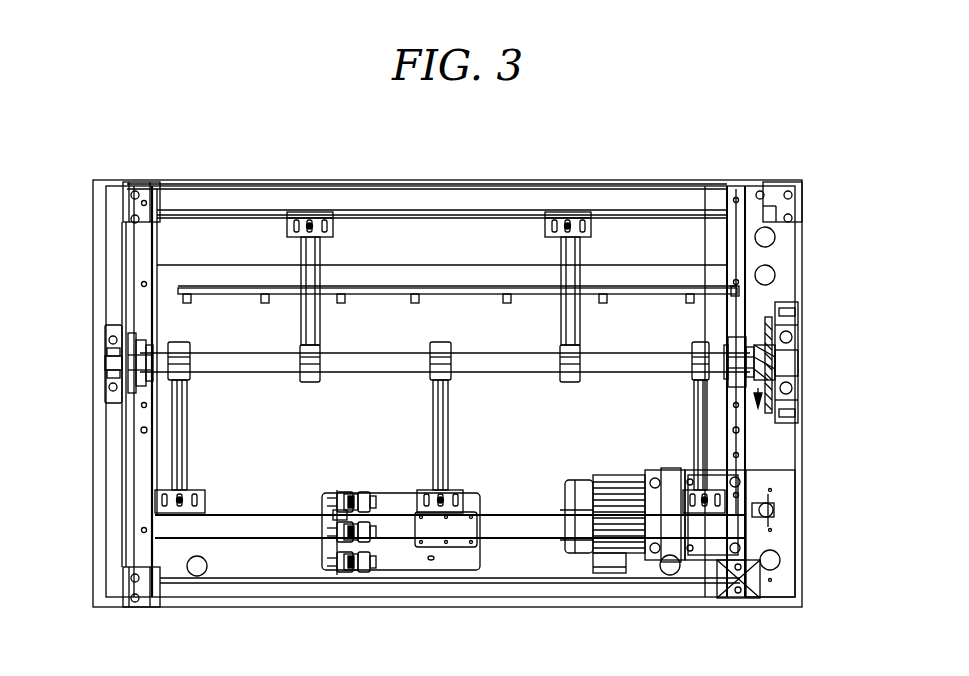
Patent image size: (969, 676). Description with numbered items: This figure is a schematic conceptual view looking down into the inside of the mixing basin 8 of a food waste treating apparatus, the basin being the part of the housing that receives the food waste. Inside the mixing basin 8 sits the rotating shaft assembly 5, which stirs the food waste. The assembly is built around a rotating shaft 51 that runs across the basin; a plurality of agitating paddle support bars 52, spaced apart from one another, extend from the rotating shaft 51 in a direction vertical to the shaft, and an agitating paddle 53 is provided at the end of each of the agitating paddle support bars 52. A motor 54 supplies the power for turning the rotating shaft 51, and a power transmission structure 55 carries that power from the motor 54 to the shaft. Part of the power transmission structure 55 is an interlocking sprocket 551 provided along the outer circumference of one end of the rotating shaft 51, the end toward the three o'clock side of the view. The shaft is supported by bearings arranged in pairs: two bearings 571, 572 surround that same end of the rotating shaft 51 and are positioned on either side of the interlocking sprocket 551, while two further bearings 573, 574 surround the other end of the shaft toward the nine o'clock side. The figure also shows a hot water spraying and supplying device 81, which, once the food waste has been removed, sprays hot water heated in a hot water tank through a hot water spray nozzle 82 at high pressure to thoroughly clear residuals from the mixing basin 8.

The rotating shaft assembly 5 is at (493, 348).
The mixing basin 8 is at (158, 318).
The rotating shaft 51 is at (662, 360).
The agitating paddle support bars 52 is at (577, 262).
The agitating paddle 53 is at (560, 212).
The motor 54 is at (640, 562).
The power transmission structure 55 is at (758, 410).
The hot water spraying and supplying device 81 is at (436, 288).
The hot water spray nozzle 82 is at (345, 287).
The interlocking sprocket 551 is at (770, 384).
The bearing 571 is at (780, 348).
The bearing 572 is at (738, 337).
The bearing 573 is at (112, 351).
The bearing 574 is at (140, 378).